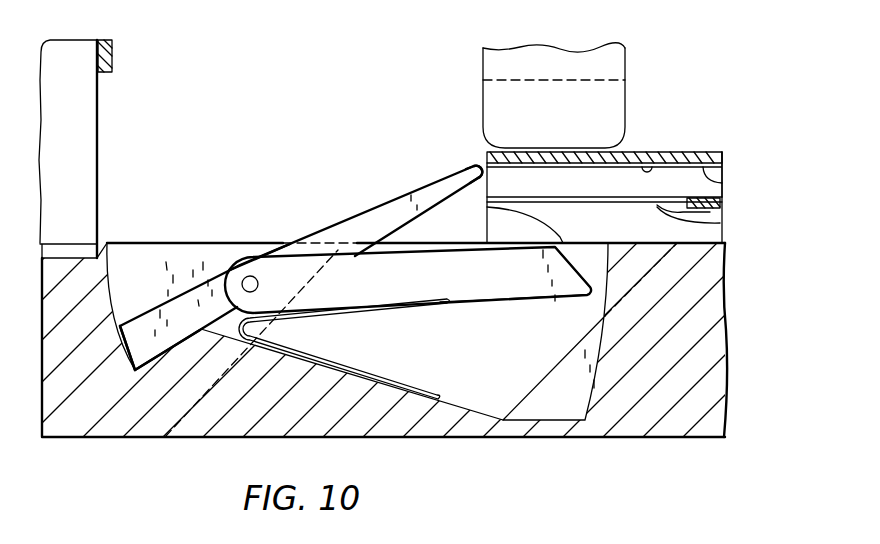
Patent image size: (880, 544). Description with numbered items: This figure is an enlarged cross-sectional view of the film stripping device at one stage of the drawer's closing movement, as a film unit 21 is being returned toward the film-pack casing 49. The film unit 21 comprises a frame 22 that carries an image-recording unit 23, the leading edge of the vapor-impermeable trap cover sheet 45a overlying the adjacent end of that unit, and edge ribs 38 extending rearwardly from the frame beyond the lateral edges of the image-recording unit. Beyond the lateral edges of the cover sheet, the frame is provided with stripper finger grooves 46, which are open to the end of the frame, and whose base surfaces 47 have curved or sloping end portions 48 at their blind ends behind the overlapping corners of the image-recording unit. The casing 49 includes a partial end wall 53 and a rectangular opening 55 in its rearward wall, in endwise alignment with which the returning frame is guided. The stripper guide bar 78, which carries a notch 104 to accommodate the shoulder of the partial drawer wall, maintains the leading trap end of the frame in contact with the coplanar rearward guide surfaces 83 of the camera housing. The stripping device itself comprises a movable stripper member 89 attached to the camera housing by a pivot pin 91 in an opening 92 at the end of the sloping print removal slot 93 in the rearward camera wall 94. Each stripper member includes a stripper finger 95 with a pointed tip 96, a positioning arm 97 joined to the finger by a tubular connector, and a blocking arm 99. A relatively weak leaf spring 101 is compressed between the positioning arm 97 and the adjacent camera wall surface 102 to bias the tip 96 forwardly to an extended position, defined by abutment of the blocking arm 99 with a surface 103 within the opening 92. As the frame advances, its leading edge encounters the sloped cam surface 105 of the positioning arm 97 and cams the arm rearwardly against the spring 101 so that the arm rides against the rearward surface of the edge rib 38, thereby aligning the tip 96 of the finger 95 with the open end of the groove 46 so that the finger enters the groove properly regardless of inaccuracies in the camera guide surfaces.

The film unit 21 is at (696, 149).
The frame 22 is at (727, 159).
The image-recording unit 23 is at (726, 204).
The edge ribs 38 is at (515, 233).
The trap cover sheet 45a is at (720, 223).
The stripper finger grooves 46 is at (493, 173).
The base surfaces 47 is at (647, 153).
The sloping end portions 48 is at (723, 181).
The film-pack casing 49 is at (78, 147).
The partial end wall 53 is at (113, 47).
The rectangular opening 55 is at (64, 250).
The stripper guide bar 78 is at (490, 63).
The rearward guide surfaces 83 is at (722, 244).
The stripper members 89 is at (255, 248).
The pivot pins 91 is at (259, 285).
The openings 92 is at (187, 258).
The print removal slot 93 is at (488, 383).
The rearward camera wall 94 is at (727, 330).
The stripper finger 95 is at (380, 212).
The tip 96 is at (472, 170).
The positioning arm 97 is at (488, 292).
The blocking arm 99 is at (145, 322).
The leaf spring 101 is at (373, 368).
The camera wall surface 102 is at (460, 400).
The surface 103 is at (172, 340).
The notch 104 is at (487, 88).
The sloped cam surfaces 105 is at (577, 267).